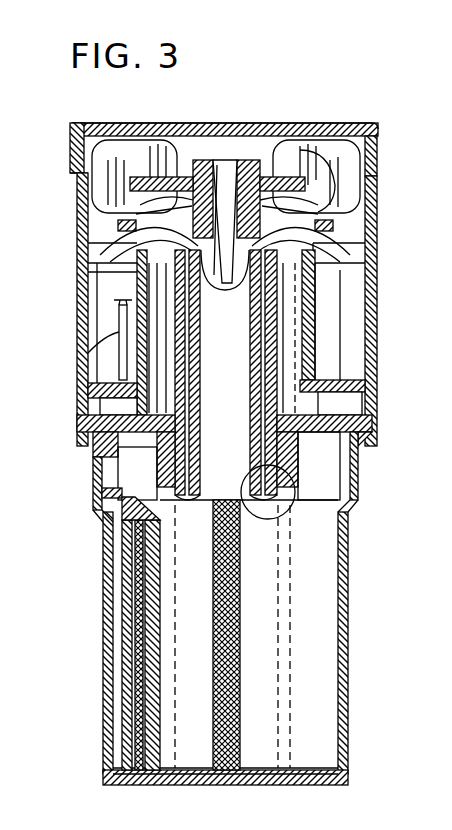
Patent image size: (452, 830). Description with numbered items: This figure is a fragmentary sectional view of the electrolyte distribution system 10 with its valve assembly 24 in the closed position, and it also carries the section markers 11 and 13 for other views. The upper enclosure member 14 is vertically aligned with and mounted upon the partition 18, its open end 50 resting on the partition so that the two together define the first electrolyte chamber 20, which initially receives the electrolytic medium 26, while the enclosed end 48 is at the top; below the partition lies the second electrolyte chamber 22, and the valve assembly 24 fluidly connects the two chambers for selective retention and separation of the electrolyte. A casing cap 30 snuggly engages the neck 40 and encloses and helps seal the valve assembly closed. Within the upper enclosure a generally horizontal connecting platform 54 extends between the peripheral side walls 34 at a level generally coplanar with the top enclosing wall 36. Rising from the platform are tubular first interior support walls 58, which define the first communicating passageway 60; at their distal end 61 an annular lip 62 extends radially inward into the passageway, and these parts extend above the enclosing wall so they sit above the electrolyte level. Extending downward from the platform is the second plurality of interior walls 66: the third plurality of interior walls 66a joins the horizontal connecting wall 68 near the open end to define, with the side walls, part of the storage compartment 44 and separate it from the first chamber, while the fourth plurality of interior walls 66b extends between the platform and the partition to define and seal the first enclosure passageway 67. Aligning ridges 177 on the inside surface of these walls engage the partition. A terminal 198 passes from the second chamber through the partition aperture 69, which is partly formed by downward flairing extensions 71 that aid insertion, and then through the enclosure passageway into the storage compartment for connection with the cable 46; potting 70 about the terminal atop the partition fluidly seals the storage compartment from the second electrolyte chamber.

The electrolyte distribution system 10 is at (280, 514).
The upper enclosure member 14 is at (378, 206).
The partition 18 is at (370, 435).
The first electrolyte chamber 20 is at (363, 264).
The second electrolyte chamber 22 is at (203, 552).
The valve assembly 24 is at (216, 162).
The electrolytic medium 26 is at (140, 282).
The casing cap 30 is at (365, 126).
The peripheral side walls 34 is at (378, 294).
The top enclosing wall 36 is at (105, 243).
The neck 40 is at (77, 181).
The storage compartment 44 is at (350, 303).
The cable 46 is at (100, 356).
The enclosed end 48 is at (378, 170).
The open end 50 is at (378, 390).
The connecting platform 54 is at (355, 244).
The first interior support walls 58 is at (118, 228).
The first communicating passageway 60 is at (138, 198).
The distal end 61 is at (305, 178).
The annular lip 62 is at (292, 180).
The second plurality of interior walls 66 is at (160, 293).
The third plurality of interior walls 66a is at (345, 323).
The fourth plurality of interior walls 66b is at (97, 379).
The first enclosure passageway 67 is at (120, 272).
The horizontal connecting wall 68 is at (365, 376).
The partition aperture 69 is at (88, 432).
The potting 70 is at (100, 392).
The flairing extensions 71 is at (100, 460).
The aligning ridges 177 is at (197, 306).
The terminal 198 is at (100, 492).
The section line 11- 11 is at (433, 303).
The section line 13- 13 is at (423, 510).